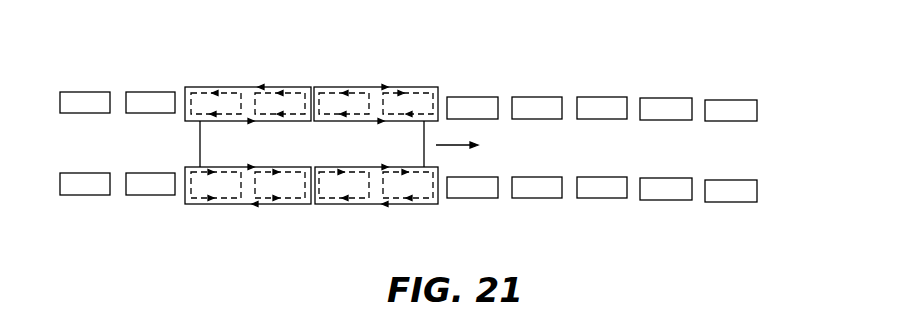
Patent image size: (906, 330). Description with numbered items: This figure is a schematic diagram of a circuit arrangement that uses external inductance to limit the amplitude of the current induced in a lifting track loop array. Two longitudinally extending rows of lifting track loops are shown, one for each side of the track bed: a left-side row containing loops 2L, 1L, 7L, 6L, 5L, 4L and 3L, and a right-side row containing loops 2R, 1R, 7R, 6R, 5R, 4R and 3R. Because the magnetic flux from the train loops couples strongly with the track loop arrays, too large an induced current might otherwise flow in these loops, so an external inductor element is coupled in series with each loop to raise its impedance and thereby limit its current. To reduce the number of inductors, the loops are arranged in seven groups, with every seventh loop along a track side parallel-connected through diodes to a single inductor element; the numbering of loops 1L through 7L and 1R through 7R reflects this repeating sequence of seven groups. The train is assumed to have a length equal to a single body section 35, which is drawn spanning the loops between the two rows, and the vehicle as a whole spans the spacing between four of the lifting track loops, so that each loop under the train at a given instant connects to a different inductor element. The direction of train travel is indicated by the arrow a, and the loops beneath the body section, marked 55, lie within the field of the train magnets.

The lifting track loop 2L is at (110, 92).
The lifting track loop 1L is at (175, 92).
The lifting track loop 7L is at (241, 88).
The lifting track loop 6L is at (305, 88).
The lifting track loop 5L is at (369, 88).
The lifting track loop 4L is at (433, 88).
The lifting track loop 3L is at (496, 97).
The lifting track loop 2R is at (110, 195).
The lifting track loop 1R is at (175, 195).
The lifting track loop 7R is at (241, 204).
The lifting track loop 6R is at (305, 204).
The lifting track loop 5R is at (369, 204).
The lifting track loop 4R is at (433, 204).
The lifting track loop 3R is at (496, 198).
The endless conveyor unit 55 is at (258, 87).
The body section 35 is at (309, 153).
The direction of travel a is at (450, 147).